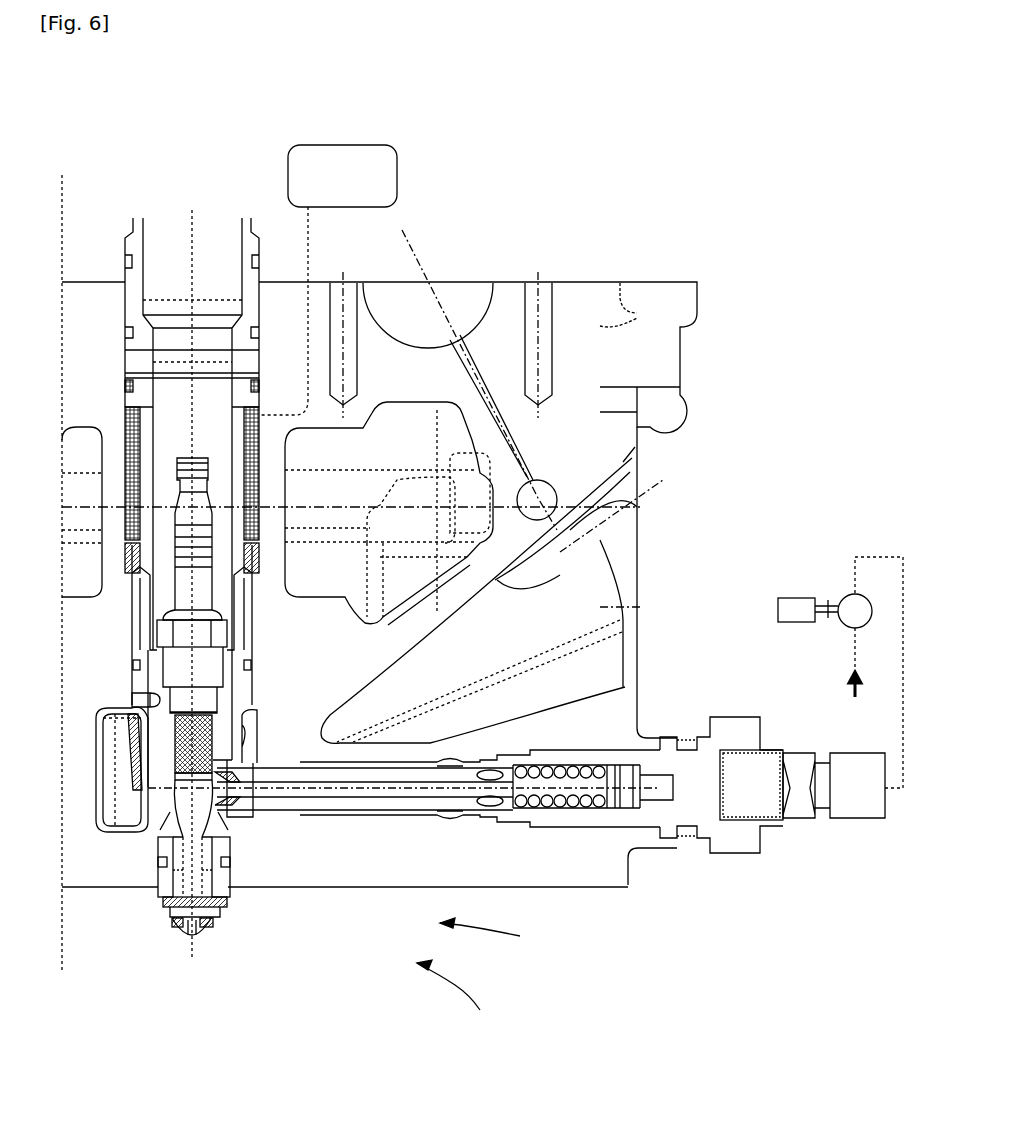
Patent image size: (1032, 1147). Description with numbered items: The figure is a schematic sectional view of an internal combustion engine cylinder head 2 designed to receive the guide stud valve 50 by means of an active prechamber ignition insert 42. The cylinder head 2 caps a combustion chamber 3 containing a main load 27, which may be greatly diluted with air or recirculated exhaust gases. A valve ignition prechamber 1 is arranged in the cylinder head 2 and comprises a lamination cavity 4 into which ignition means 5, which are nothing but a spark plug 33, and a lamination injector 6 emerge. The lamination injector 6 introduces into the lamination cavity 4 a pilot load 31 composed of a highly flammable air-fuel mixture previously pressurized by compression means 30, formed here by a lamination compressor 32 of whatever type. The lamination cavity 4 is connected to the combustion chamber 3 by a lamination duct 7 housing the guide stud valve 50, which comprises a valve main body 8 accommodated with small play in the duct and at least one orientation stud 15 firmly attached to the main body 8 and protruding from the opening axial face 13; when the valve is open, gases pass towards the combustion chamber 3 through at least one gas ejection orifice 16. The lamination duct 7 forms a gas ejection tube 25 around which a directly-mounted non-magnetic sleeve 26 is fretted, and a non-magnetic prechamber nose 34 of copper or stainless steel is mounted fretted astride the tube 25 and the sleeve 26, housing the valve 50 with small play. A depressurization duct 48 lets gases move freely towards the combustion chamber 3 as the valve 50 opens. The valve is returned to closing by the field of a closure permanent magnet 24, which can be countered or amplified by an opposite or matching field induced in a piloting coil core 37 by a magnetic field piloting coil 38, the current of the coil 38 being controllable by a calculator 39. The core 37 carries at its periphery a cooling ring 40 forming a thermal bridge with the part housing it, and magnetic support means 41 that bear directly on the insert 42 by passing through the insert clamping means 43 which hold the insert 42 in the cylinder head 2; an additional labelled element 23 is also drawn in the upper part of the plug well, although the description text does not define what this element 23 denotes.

The valve ignition prechamber 1 is at (197, 813).
The internal combustion engine cylinder head 2 is at (607, 293).
The combustion chamber 3 is at (489, 936).
The lamination cavity 4 is at (205, 803).
The ignition means 5 is at (177, 443).
The lamination injector 6 is at (607, 733).
The lamination duct 7 is at (190, 880).
The valve main body 8 is at (173, 920).
The opening axial face 13 is at (235, 837).
The orientation stud 15 is at (189, 935).
The gas ejection orifice 16 is at (218, 903).
The coil plate 23 is at (140, 363).
The closure permanent magnet 24 is at (247, 358).
The gas ejection tube 25 is at (183, 893).
The directly-mounted non-magnetic sleeve 26 is at (227, 897).
The main load 27 is at (456, 999).
The compression means 30 is at (832, 580).
The pilot load 31 is at (200, 800).
The lamination compressor 32 is at (850, 620).
The spark plug 33 is at (198, 455).
The non-magnetic prechamber nose 34 is at (202, 925).
The piloting coil core 37 is at (140, 570).
The magnetic field piloting coil 38 is at (130, 440).
The calculator 39 is at (397, 178).
The cooling ring 40 is at (258, 403).
The magnetic support means 41 is at (150, 612).
The active prechamber ignition insert 42 is at (230, 707).
The insert clamping means 43 is at (248, 608).
The depressurization duct 48 is at (210, 930).
The guide stud valve 50 is at (195, 930).